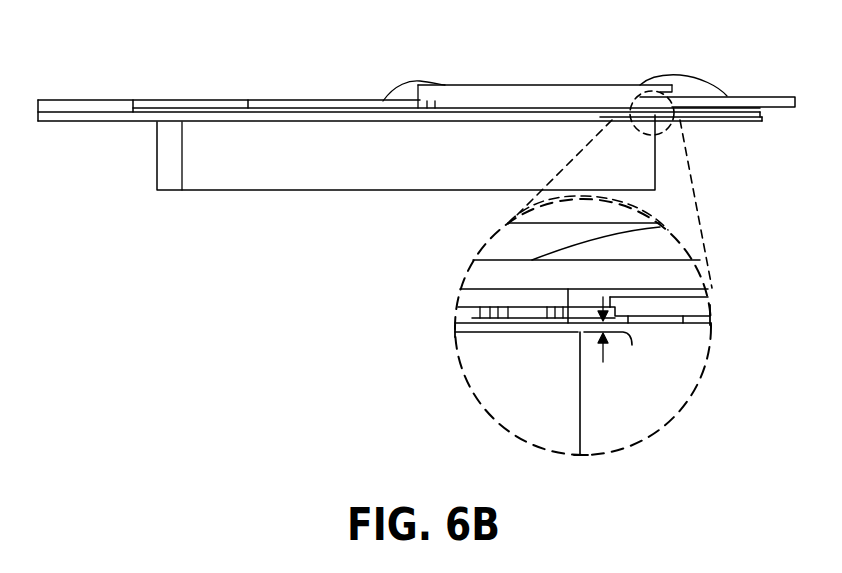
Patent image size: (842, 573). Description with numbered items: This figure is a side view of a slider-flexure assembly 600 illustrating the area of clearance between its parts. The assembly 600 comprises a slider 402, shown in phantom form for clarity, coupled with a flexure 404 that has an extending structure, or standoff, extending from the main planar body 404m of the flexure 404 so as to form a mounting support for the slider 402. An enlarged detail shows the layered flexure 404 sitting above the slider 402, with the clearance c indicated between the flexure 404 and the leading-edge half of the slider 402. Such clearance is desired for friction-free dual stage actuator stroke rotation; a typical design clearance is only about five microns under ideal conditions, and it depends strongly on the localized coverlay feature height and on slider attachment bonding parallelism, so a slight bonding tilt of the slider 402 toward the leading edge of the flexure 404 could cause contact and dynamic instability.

The assembly 600 is at (206, 43).
The slider 402 is at (403, 165).
The flexure 404 is at (752, 97).
The main planar body 404m is at (678, 326).